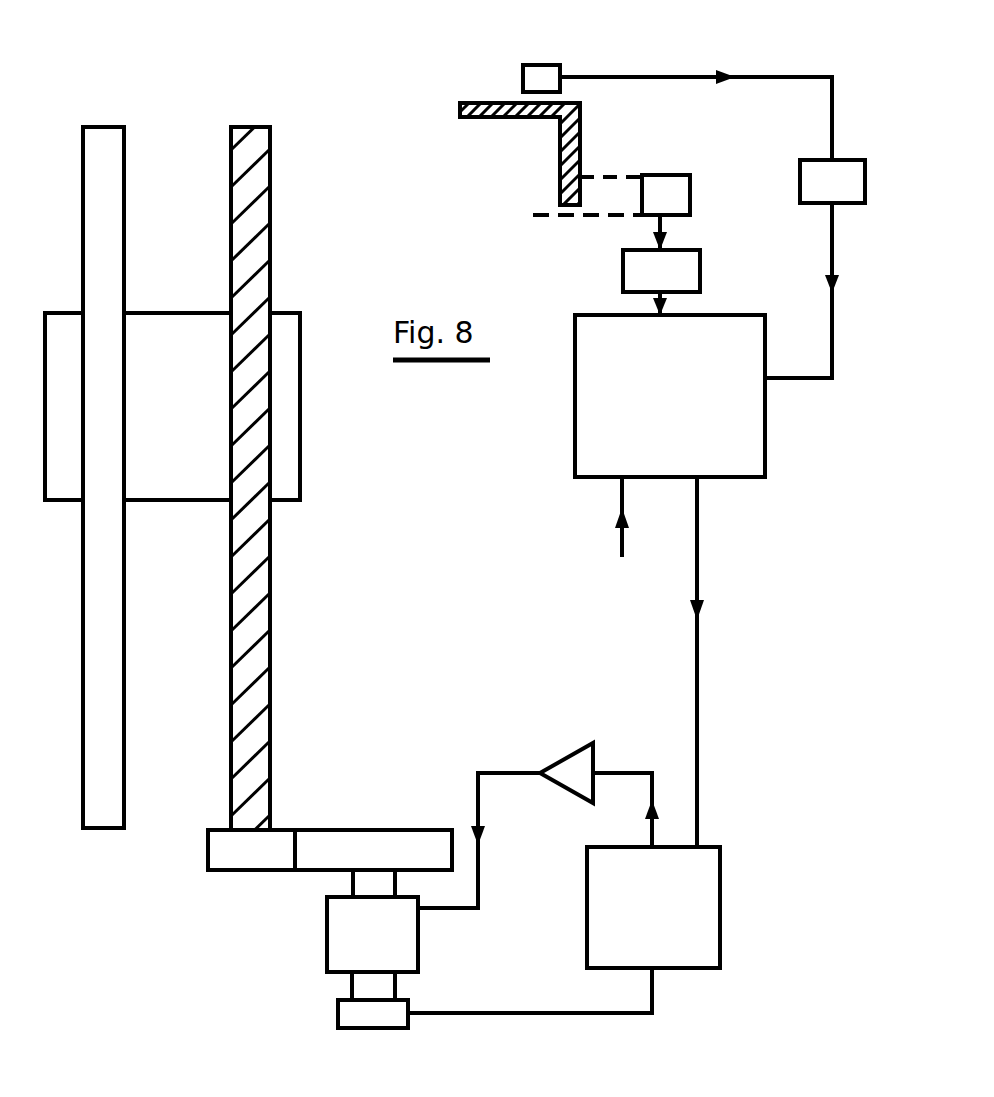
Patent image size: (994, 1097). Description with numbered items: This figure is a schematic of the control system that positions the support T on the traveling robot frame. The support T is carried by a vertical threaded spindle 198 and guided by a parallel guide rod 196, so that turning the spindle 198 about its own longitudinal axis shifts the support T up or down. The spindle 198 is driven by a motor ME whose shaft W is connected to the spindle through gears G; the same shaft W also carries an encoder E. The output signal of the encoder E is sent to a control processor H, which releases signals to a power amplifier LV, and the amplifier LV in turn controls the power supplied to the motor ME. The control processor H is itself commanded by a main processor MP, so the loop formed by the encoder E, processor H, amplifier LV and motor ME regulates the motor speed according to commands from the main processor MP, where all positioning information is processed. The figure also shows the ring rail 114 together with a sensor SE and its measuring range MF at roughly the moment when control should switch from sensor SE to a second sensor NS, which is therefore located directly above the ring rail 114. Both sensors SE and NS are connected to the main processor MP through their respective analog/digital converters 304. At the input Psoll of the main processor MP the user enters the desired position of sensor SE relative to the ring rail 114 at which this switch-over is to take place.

The support T is at (182, 336).
The guide rod 196 is at (114, 698).
The threaded spindle 198 is at (262, 674).
The gears G is at (368, 777).
The shaft W is at (352, 884).
The motor ME is at (352, 926).
The encoder E is at (350, 1016).
The power amplifier LV is at (580, 774).
The control processor H is at (732, 935).
The main processor MP is at (750, 436).
The input P soll (P target) Psoll is at (572, 520).
The analog/digital converter 304 is at (800, 212).
The sensor SE is at (680, 198).
The measuring range MF is at (606, 182).
The ring rail 114 is at (530, 128).
The sensor NS is at (542, 78).